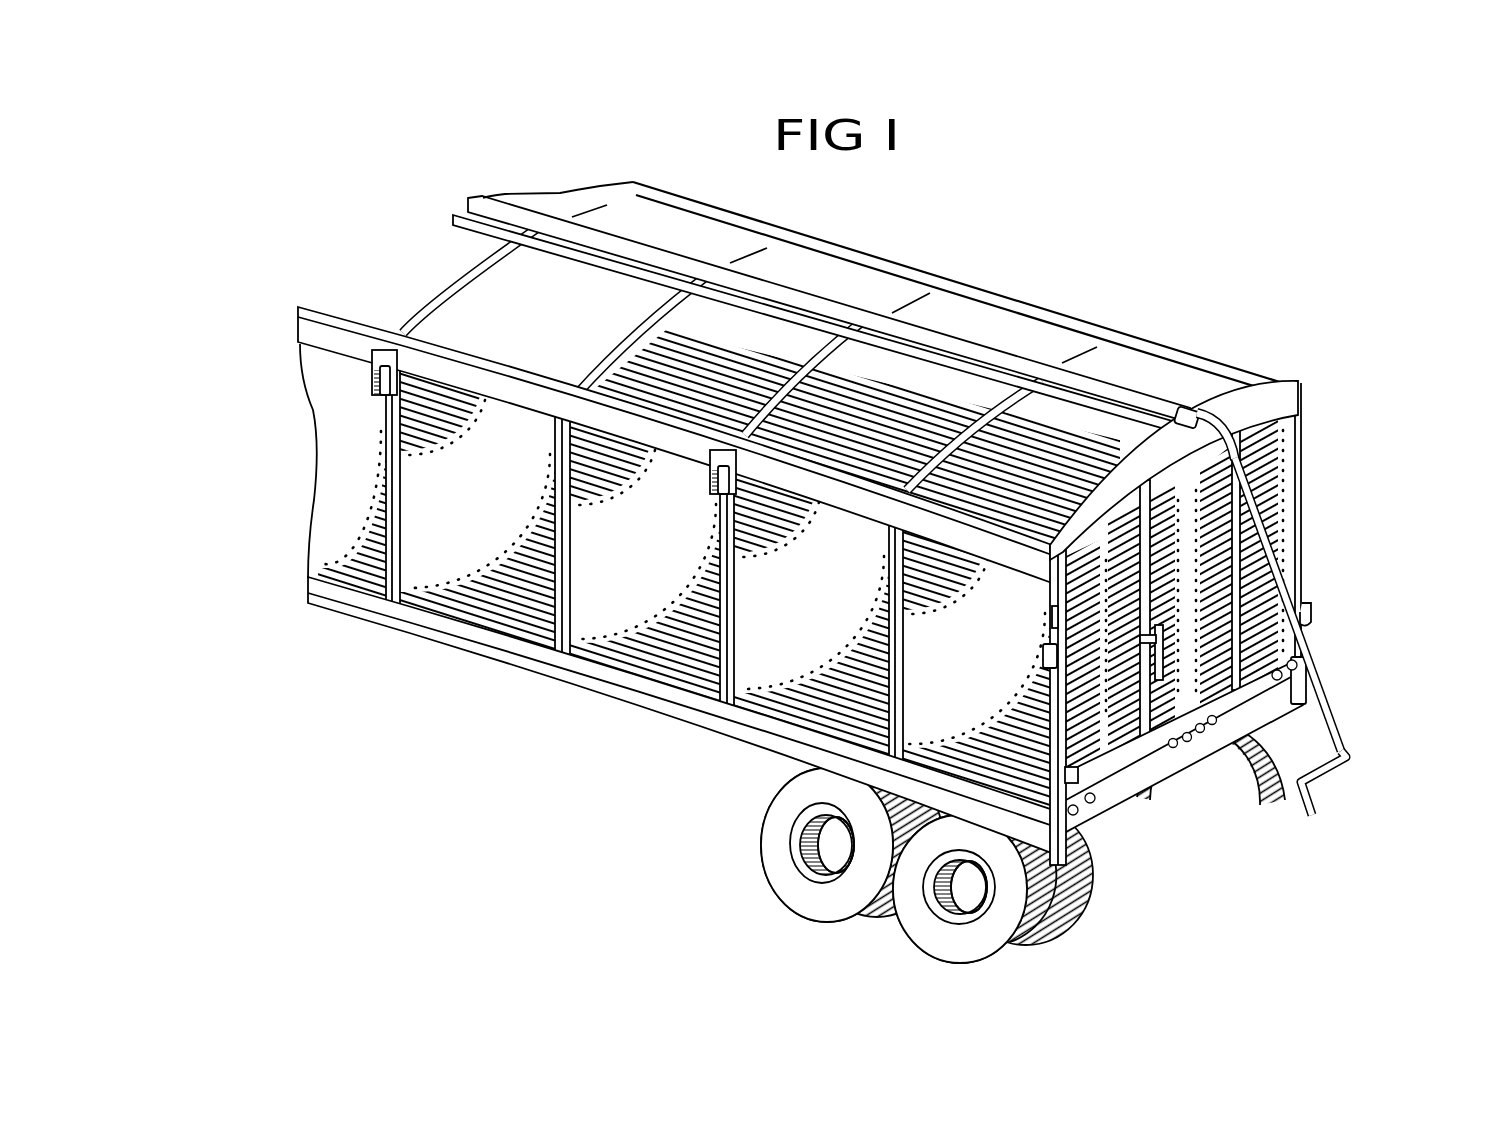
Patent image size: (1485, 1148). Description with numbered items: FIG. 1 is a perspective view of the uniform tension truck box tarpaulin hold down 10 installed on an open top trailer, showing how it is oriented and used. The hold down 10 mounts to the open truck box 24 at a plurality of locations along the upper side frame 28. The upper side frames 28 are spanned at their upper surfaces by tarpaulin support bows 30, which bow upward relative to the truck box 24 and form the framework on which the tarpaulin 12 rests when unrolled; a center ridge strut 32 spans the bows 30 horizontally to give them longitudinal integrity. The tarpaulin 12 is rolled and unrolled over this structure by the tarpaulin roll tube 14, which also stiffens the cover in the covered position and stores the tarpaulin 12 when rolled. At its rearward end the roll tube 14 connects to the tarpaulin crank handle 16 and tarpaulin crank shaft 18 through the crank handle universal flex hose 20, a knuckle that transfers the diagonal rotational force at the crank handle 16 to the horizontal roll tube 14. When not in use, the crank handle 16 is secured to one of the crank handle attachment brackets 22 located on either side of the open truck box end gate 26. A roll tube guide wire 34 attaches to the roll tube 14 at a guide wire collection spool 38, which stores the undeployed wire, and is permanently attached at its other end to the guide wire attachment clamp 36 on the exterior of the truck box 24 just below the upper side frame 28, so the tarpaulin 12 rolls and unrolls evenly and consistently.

The truck box tarpaulin hold down 10 is at (388, 398).
The tarpaulin 12 is at (988, 333).
The tarpaulin roll tube 14 is at (463, 195).
The tarpaulin crank handle 16 is at (1317, 790).
The tarpaulin crank shaft 18 is at (1330, 673).
The crank handle universal flex hose 20 is at (1227, 426).
The crank handle attachment bracket 22 is at (1318, 607).
The open truck box 24 is at (300, 440).
The open truck box end gate 26 is at (1187, 568).
The upper side frame 28 is at (290, 323).
The tarpaulin support bow 30 is at (988, 403).
The center ridge strut 32 is at (443, 213).
The roll tube guide wire 34 is at (1153, 452).
The guide wire attachment clamp 36 is at (1040, 662).
The guide wire collection spool 38 is at (1192, 406).